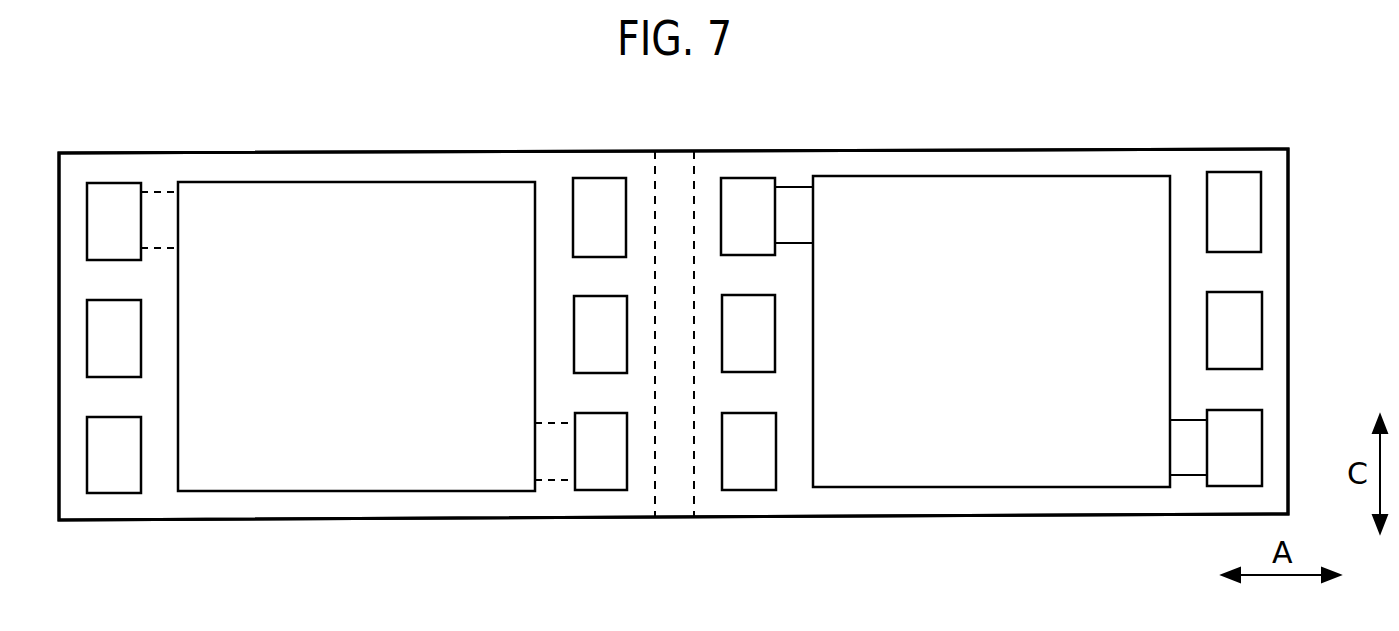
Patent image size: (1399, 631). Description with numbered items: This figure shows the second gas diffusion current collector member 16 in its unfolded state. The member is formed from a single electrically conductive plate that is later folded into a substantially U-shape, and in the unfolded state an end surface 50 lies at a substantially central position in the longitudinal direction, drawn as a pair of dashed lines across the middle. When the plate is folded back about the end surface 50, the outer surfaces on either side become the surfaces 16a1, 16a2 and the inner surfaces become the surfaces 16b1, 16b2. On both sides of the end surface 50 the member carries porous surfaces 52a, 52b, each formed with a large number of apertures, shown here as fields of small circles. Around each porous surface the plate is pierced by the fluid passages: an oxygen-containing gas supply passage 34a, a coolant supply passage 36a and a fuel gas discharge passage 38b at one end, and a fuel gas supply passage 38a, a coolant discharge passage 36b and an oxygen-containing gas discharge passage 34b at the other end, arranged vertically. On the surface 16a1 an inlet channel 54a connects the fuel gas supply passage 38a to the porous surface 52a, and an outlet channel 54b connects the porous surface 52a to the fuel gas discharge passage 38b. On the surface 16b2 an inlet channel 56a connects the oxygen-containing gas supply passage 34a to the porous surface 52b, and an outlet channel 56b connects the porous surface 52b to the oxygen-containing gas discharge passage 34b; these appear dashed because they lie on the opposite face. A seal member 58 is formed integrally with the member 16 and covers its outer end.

The second gas diffusion current collector member 16 is at (1161, 107).
The surface 16a1 is at (1035, 500).
The surface 16a2 is at (400, 505).
The surface 16b1 is at (1094, 500).
The surface 16b2 is at (461, 505).
The oxygen-containing gas supply passage 34a is at (674, 216).
The oxygen-containing gas discharge passage 34b is at (675, 451).
The coolant supply passage 36a is at (674, 334).
The coolant discharge passage 36b is at (674, 334).
The fuel gas supply passage 38a is at (674, 217).
The fuel gas discharge passage 38b is at (674, 451).
The end surface 50 is at (670, 165).
The porous surface 52a is at (907, 422).
The porous surface 52b is at (273, 422).
The inlet channel 54a is at (786, 200).
The outlet channel 54b is at (1197, 462).
The inlet channel 56a is at (152, 200).
The outlet channel 56b is at (563, 468).
The seal member 58 is at (1290, 325).